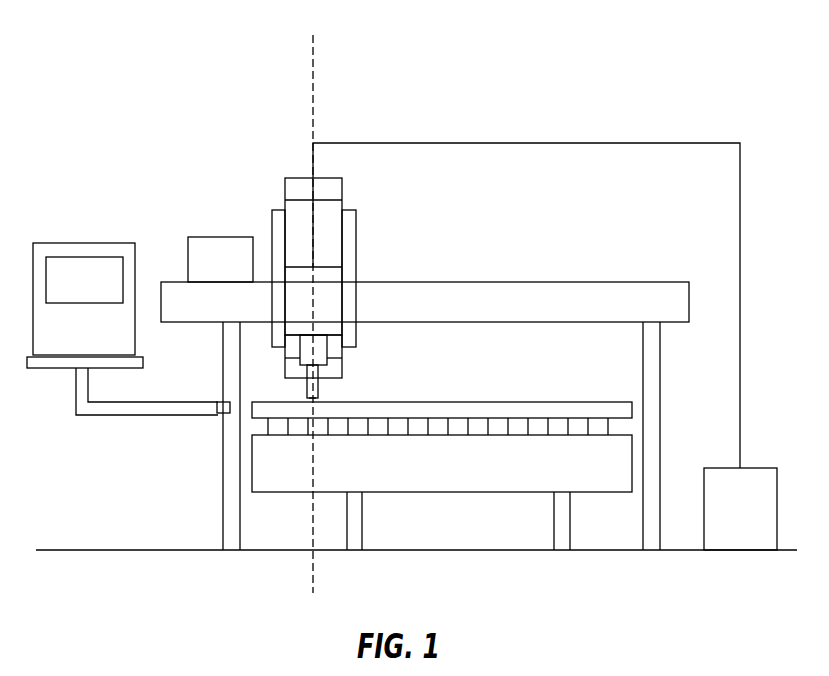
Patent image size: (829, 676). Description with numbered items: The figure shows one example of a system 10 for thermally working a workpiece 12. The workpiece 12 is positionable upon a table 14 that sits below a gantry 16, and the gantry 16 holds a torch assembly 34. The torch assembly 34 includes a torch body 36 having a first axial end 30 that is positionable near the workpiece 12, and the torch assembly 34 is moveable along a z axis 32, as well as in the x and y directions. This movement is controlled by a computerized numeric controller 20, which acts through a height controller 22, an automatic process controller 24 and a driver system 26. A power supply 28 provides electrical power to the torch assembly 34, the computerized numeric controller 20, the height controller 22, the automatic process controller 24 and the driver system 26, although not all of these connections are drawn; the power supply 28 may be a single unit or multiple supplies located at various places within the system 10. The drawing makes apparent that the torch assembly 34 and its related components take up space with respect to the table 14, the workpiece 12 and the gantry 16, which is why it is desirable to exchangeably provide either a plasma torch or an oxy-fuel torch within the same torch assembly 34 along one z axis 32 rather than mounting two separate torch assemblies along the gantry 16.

The system 10 is at (180, 63).
The workpiece 12 is at (458, 407).
The table 14 is at (427, 492).
The gantry 16 is at (548, 295).
The computerized numeric controller 20 is at (77, 243).
The height controller 22 is at (285, 190).
The automatic process controller 24 is at (328, 277).
The driver system 26 is at (188, 255).
The power supply 28 is at (762, 466).
The first axial end 30 is at (308, 406).
The z axis 32 is at (316, 91).
The torch assembly 34 is at (368, 275).
The torch body 36 is at (318, 390).